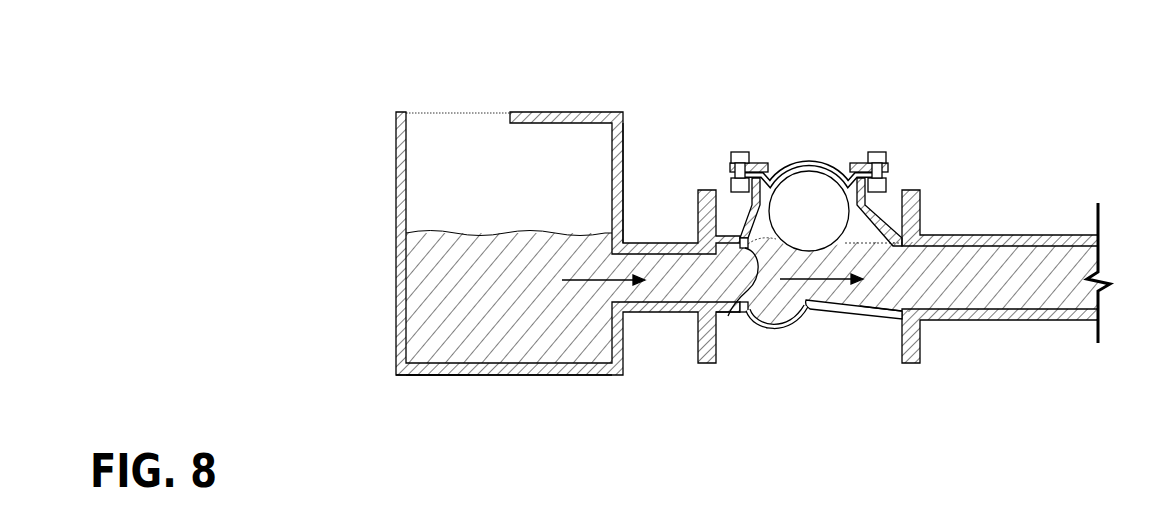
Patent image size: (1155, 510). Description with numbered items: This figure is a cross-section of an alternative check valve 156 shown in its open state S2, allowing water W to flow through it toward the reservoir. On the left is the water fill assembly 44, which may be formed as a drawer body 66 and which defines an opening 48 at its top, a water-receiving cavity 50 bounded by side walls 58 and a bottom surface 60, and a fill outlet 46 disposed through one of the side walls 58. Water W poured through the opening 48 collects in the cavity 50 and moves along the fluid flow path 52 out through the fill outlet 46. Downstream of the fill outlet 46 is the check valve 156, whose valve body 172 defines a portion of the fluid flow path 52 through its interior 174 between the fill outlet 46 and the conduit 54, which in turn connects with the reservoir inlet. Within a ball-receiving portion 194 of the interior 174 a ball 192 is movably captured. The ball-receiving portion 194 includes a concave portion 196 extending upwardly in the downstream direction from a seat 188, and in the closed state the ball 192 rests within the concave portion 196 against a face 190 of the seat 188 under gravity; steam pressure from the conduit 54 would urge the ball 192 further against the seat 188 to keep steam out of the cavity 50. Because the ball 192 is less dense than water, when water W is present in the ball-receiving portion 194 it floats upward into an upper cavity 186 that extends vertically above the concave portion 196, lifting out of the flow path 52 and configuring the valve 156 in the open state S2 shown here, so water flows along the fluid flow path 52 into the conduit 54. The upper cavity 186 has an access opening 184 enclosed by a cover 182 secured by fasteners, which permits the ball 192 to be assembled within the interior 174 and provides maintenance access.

The water fill assembly 44 is at (636, 95).
The fill outlet 46 is at (693, 243).
The opening 48 is at (469, 97).
The water-receiving cavity 50 is at (507, 201).
The fluid flow path 52 is at (803, 278).
The conduit 54 is at (1032, 234).
The side wall 58 is at (623, 165).
The bottom surface 60 is at (507, 376).
The drawer body 66 is at (442, 379).
The check valve 156 is at (824, 238).
The valve body 172 is at (867, 314).
The interior 174 is at (732, 312).
The cover 182 is at (828, 164).
The access opening 184 is at (888, 163).
The upper cavity 186 is at (757, 205).
The seat 188 is at (745, 248).
The face 190 is at (736, 300).
The ball 192 is at (800, 197).
The ball-receiving portion 194 is at (852, 238).
The concave portion 196 is at (771, 341).
The open state S2 is at (806, 178).
The water W is at (584, 348).